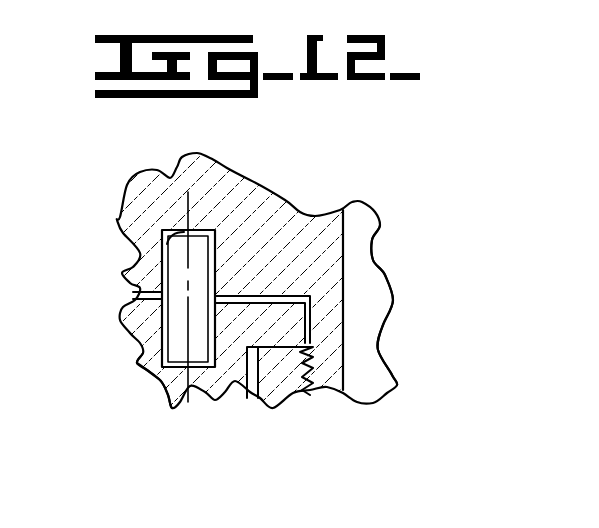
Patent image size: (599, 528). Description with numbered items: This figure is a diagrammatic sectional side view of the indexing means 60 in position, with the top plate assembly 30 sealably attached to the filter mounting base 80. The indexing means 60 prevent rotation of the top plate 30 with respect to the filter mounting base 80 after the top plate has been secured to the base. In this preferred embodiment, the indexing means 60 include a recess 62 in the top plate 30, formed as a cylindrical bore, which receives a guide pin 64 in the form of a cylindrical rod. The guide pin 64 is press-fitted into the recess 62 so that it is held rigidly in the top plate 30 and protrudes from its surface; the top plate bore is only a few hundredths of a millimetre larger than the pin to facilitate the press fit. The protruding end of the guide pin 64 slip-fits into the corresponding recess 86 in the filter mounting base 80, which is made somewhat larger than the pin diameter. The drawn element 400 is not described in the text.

The top plate assembly 30 is at (163, 378).
The indexing means 60 is at (403, 302).
The recess 62 is at (162, 346).
The guide pin 64 is at (178, 288).
The filter mounting base 80 is at (303, 246).
The recess 86 is at (167, 243).
The threaded insert 400 is at (285, 390).